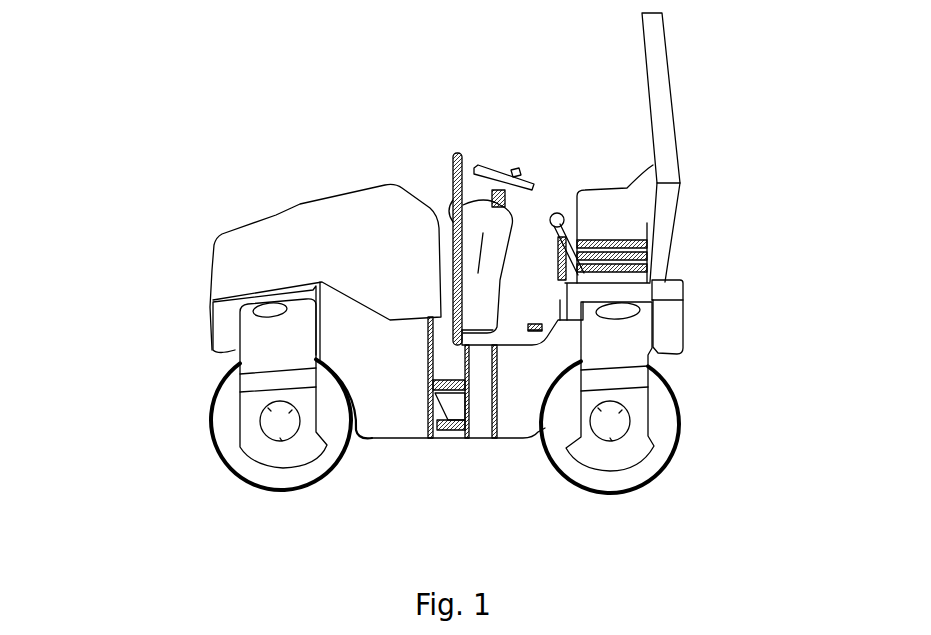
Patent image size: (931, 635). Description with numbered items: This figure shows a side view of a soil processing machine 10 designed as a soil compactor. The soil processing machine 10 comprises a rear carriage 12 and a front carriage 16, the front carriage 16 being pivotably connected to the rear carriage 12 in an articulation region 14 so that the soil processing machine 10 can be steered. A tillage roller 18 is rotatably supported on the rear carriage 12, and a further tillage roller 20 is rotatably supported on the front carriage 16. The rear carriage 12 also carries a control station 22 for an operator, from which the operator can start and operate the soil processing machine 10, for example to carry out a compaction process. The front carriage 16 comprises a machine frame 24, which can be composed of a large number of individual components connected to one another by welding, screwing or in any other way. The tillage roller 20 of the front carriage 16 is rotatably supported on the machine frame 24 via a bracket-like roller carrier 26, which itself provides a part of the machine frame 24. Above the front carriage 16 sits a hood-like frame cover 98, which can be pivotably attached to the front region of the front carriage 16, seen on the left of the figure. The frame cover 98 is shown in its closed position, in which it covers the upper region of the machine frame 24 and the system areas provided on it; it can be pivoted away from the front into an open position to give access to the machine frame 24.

The soil processing machine 10 is at (727, 108).
The rear carriage 12 is at (683, 312).
The articulation region 14 is at (455, 449).
The front carriage 16 is at (212, 338).
The tillage roller 18 is at (683, 438).
The tillage roller 20 is at (228, 468).
The control station 22 is at (571, 105).
The machine frame 24 is at (387, 418).
The roller carrier 26 is at (255, 352).
The frame cover 98 is at (265, 212).